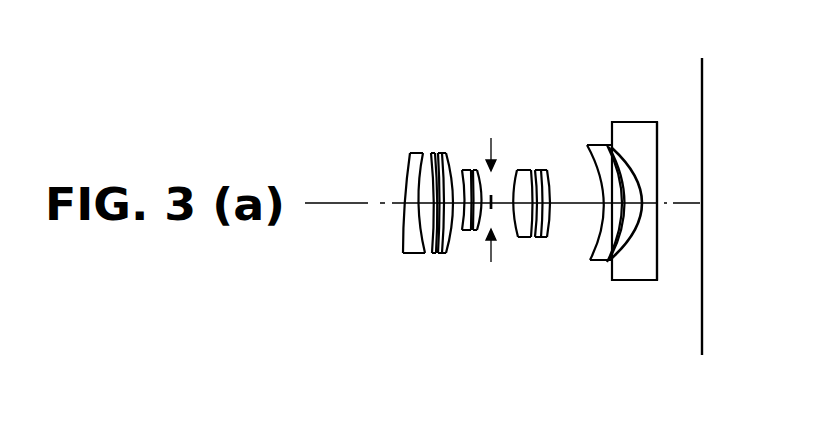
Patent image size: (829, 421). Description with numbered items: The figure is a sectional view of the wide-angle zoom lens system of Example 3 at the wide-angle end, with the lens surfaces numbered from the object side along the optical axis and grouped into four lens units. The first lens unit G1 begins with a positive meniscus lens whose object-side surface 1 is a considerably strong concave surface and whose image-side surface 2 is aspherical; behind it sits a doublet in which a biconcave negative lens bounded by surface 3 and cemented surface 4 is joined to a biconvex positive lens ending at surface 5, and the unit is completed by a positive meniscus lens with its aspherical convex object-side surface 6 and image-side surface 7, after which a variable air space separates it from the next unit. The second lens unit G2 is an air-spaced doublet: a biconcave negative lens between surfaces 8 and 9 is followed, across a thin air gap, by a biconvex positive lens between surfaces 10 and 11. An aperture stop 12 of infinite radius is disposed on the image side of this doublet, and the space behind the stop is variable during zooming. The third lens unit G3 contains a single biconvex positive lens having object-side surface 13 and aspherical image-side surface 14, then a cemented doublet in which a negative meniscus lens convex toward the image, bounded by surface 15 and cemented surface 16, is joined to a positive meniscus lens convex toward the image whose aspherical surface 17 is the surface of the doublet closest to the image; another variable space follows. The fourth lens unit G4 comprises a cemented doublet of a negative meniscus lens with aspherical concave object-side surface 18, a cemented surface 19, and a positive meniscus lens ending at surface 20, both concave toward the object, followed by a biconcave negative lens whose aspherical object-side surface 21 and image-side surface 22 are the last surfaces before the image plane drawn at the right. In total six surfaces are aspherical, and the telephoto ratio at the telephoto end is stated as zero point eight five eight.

The first lens surface 1 is at (405, 166).
The second lens surface 2 is at (409, 152).
The third lens surface 3 is at (429, 152).
The fourth lens surface 4 is at (434, 152).
The fifth lens surface 5 is at (437, 152).
The sixth lens surface 6 is at (442, 152).
The seventh lens surface 7 is at (449, 152).
The eighth lens surface 8 is at (465, 168).
The ninth lens surface 9 is at (473, 168).
The tenth lens surface 10 is at (479, 168).
The eleventh lens surface 11 is at (485, 168).
The aperture stop 12 is at (495, 188).
The thirteenth lens surface 13 is at (521, 168).
The fourteenth lens surface 14 is at (531, 168).
The fifteenth lens surface 15 is at (537, 168).
The sixteenth lens surface 16 is at (543, 168).
The seventeenth lens surface 17 is at (550, 167).
The eighteenth lens surface 18 is at (588, 144).
The nineteenth lens surface 19 is at (606, 144).
The twentieth lens surface 20 is at (616, 146).
The twenty-first lens surface 21 is at (636, 143).
The twenty-second lens surface 22 is at (657, 143).
The first lens unit G1 is at (455, 40).
The second lens unit G2 is at (493, 40).
The third lens unit G3 is at (551, 40).
The fourth lens unit G4 is at (657, 40).